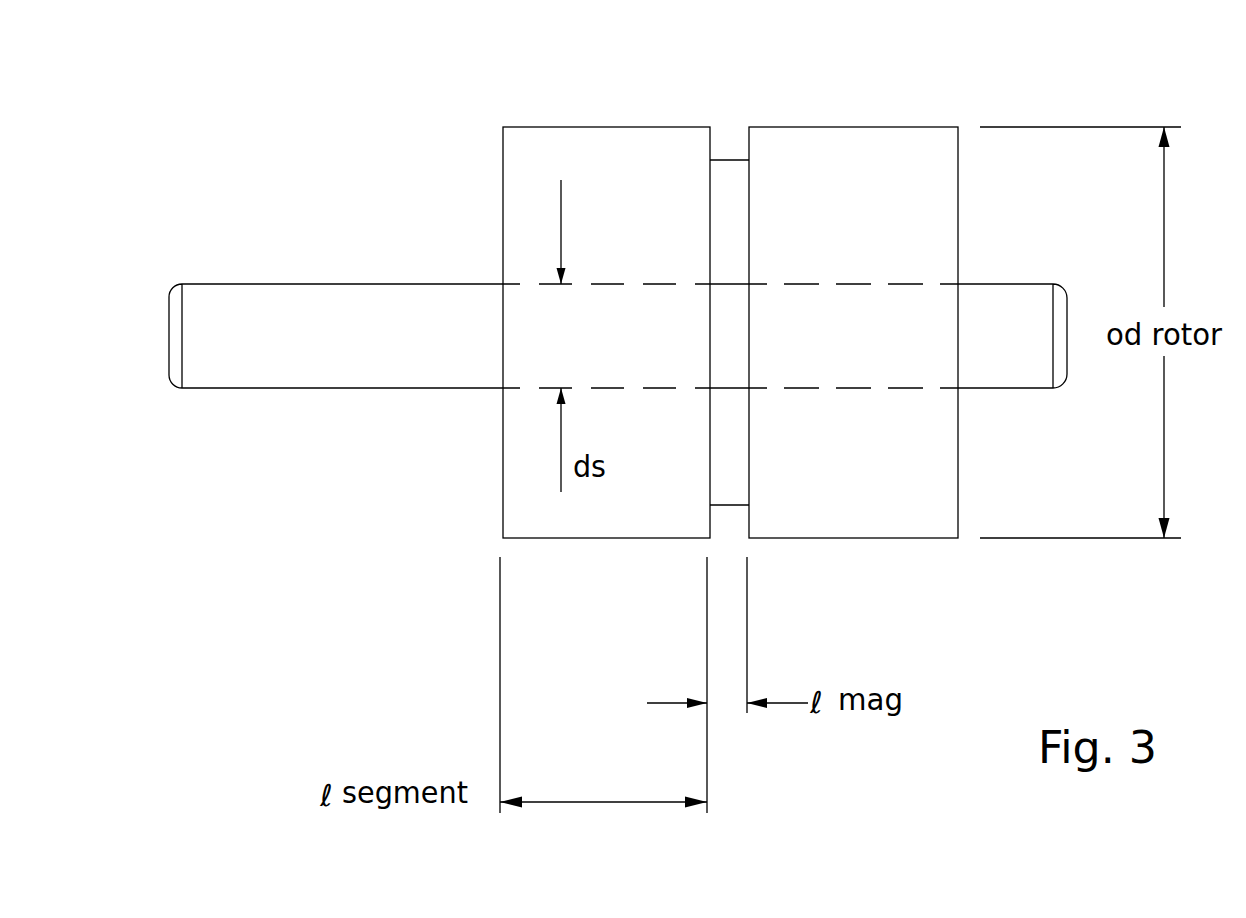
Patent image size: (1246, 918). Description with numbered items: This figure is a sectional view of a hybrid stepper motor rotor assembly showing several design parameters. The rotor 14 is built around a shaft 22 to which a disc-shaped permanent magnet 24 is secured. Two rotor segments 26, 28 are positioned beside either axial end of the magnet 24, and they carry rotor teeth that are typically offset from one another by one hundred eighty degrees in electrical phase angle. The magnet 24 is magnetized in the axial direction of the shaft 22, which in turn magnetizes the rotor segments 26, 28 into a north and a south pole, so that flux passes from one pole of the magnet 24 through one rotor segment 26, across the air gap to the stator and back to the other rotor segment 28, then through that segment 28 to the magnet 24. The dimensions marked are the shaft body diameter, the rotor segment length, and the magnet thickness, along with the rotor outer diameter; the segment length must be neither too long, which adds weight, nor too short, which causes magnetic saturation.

The rotor 14 is at (738, 328).
The shaft 22 is at (309, 320).
The permanent magnet 24 is at (731, 193).
The rotor segment 26 is at (909, 537).
The rotor segment 28 is at (560, 127).